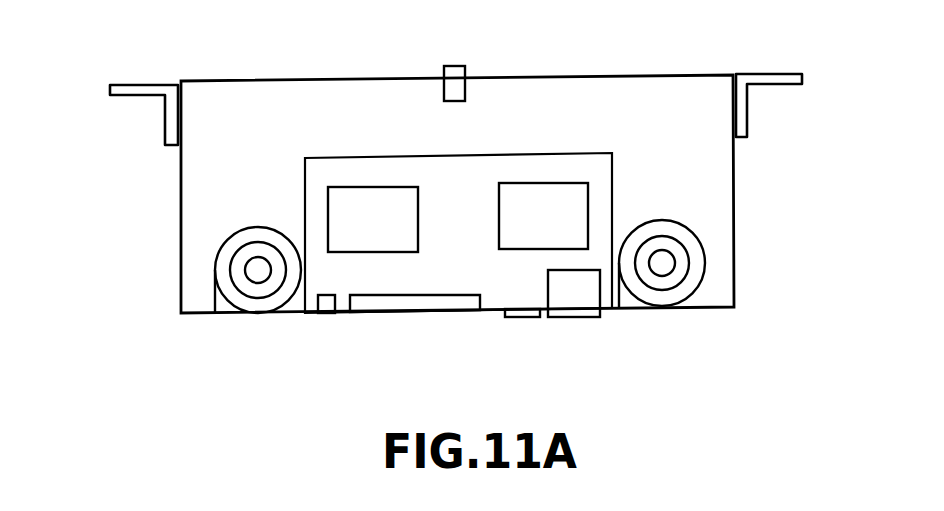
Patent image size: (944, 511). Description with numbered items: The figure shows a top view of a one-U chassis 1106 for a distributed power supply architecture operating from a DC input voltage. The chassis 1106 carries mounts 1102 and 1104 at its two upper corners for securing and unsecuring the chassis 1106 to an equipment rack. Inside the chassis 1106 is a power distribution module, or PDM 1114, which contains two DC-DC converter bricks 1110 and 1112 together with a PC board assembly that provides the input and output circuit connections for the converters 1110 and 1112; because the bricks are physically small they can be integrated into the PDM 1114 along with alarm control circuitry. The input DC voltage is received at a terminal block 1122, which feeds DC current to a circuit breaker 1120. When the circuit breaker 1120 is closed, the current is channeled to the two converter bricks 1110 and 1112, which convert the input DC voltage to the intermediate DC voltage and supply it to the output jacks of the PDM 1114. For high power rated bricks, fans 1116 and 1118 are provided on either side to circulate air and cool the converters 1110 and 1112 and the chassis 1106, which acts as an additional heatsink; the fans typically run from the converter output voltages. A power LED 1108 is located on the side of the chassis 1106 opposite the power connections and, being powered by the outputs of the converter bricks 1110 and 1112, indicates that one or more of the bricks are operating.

The mount 1102 is at (122, 85).
The mount 1104 is at (778, 74).
The chassis 1106 is at (735, 222).
The power LED 1108 is at (452, 66).
The DC-DC converter brick 1110 is at (343, 187).
The DC-DC converter brick 1112 is at (545, 183).
The PDM 1114 is at (373, 277).
The fan 1116 is at (285, 292).
The fan 1118 is at (697, 290).
The circuit breaker 1120 is at (522, 318).
The terminal block 1122 is at (585, 318).